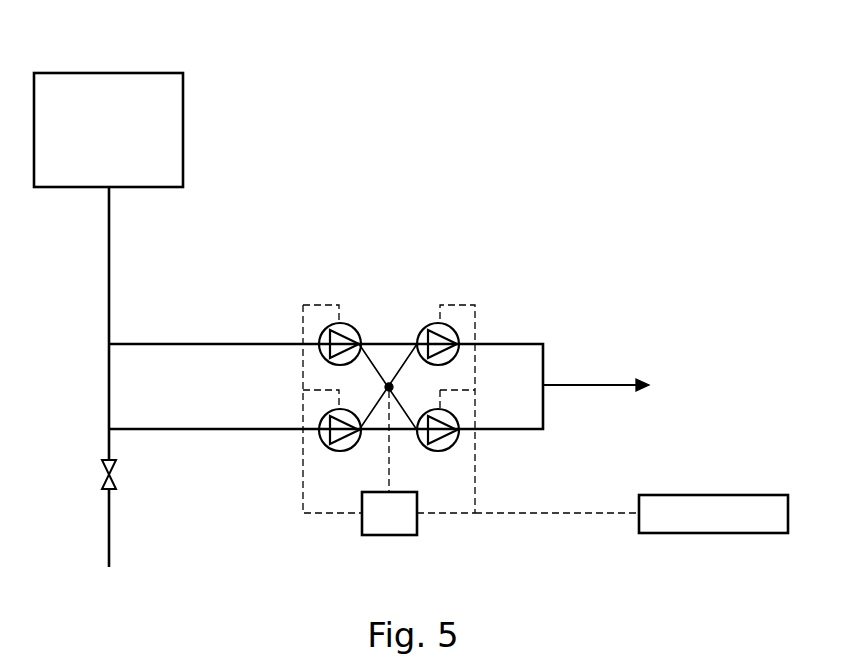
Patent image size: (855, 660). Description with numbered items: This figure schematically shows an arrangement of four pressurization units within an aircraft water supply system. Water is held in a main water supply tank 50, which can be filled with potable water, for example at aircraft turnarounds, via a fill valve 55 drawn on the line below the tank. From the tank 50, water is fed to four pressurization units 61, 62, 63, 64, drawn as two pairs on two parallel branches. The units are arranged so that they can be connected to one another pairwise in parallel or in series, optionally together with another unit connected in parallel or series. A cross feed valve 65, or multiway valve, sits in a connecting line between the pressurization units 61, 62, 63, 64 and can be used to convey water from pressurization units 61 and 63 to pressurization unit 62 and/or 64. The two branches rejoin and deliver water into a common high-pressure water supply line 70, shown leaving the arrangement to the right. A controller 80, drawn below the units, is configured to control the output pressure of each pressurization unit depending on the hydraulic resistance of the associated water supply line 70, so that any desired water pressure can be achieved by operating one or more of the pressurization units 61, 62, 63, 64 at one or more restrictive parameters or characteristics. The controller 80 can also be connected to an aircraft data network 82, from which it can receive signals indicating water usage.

The main water supply tank 50 is at (107, 95).
The fill valve 55 is at (108, 472).
The pressurization unit 61 is at (355, 322).
The pressurization unit 62 is at (438, 320).
The pressurization unit 63 is at (352, 444).
The pressurization unit 64 is at (447, 444).
The cross feed valve 65 is at (389, 382).
The high-pressure water supply line 70 is at (582, 380).
The controller 80 is at (390, 527).
The aircraft data network 82 is at (713, 527).